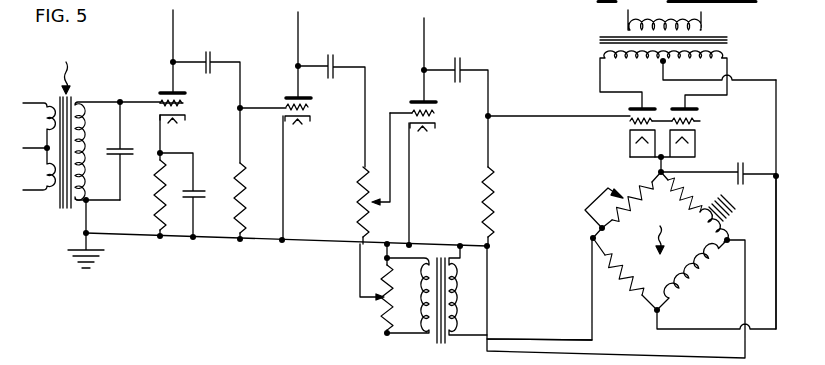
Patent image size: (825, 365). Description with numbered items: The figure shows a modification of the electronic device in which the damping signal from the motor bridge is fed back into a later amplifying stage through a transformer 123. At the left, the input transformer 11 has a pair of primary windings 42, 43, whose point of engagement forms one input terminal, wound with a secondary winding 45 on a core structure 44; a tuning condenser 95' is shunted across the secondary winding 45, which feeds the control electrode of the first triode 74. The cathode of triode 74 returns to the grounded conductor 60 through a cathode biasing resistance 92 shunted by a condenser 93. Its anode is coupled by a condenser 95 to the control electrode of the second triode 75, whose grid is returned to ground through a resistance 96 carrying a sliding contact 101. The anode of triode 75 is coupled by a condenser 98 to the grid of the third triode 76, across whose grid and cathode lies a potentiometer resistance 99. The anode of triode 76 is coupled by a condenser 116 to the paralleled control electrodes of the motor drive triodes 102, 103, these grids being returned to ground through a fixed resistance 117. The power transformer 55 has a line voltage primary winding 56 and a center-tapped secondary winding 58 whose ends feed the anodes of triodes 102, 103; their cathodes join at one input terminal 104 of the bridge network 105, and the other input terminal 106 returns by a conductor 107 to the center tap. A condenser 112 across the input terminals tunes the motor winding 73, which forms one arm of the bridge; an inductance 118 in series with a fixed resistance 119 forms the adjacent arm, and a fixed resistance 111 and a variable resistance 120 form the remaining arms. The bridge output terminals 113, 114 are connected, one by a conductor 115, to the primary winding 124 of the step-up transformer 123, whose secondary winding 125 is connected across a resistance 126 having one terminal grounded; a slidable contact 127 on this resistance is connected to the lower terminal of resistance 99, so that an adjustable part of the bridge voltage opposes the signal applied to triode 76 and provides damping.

The transformer 11 is at (73, 67).
The primary winding 42 is at (44, 118).
The primary winding 43 is at (44, 176).
The core structure 44 is at (64, 200).
The secondary winding 45 is at (92, 170).
The tuning condenser 95' is at (132, 151).
The triode 74 is at (159, 98).
The condenser 95 is at (208, 71).
The cathode biasing resistance 92 is at (156, 186).
The condenser 93 is at (204, 198).
The resistance 96 is at (234, 176).
The grounded conductor 60 is at (172, 237).
The triode 75 is at (284, 100).
The condenser 98 is at (333, 55).
The potentiometer resistance 99 is at (357, 193).
The sliding contact 101 is at (372, 210).
The triode 76 is at (411, 105).
The condenser 116 is at (460, 60).
The fixed resistance 117 is at (482, 205).
The transformer 123 is at (437, 343).
The secondary winding 125 is at (412, 291).
The primary winding 124 is at (462, 291).
The contact 127 is at (377, 302).
The resistance 126 is at (381, 326).
The conductor 115 is at (546, 339).
The line voltage primary winding 56 is at (625, 20).
The transformer 55 is at (598, 40).
The secondary winding 58 is at (643, 64).
The triode 102 is at (628, 114).
The triode 103 is at (698, 118).
The conductor 107 is at (775, 131).
The condenser 112 is at (740, 163).
The input terminal 104 is at (659, 171).
The variable resistance 120 is at (622, 190).
The fixed resistance 119 is at (680, 187).
The inductance 118 is at (712, 226).
The output terminal 113 is at (735, 229).
The output terminal 114 is at (590, 238).
The fixed resistance 111 is at (637, 278).
The winding 73 is at (682, 288).
The input terminal 106 is at (656, 311).
The bridge network 105 is at (678, 214).